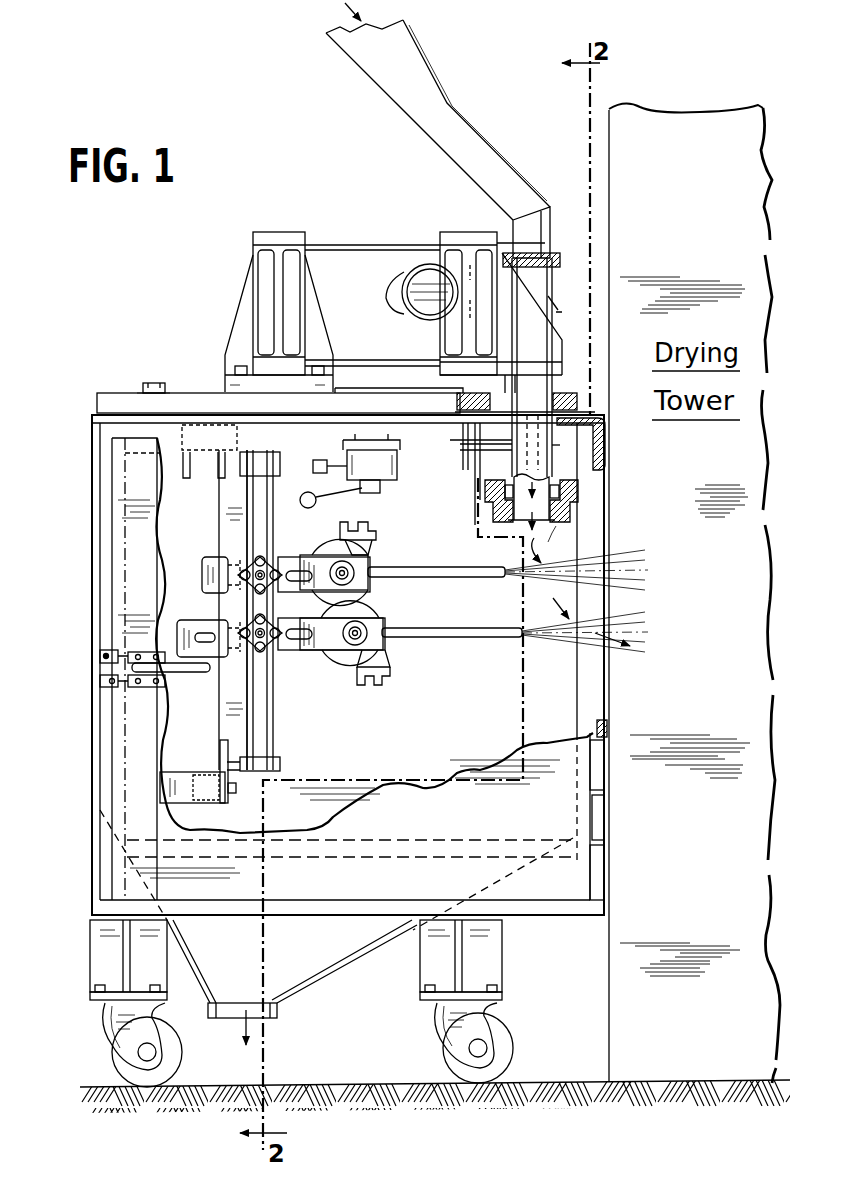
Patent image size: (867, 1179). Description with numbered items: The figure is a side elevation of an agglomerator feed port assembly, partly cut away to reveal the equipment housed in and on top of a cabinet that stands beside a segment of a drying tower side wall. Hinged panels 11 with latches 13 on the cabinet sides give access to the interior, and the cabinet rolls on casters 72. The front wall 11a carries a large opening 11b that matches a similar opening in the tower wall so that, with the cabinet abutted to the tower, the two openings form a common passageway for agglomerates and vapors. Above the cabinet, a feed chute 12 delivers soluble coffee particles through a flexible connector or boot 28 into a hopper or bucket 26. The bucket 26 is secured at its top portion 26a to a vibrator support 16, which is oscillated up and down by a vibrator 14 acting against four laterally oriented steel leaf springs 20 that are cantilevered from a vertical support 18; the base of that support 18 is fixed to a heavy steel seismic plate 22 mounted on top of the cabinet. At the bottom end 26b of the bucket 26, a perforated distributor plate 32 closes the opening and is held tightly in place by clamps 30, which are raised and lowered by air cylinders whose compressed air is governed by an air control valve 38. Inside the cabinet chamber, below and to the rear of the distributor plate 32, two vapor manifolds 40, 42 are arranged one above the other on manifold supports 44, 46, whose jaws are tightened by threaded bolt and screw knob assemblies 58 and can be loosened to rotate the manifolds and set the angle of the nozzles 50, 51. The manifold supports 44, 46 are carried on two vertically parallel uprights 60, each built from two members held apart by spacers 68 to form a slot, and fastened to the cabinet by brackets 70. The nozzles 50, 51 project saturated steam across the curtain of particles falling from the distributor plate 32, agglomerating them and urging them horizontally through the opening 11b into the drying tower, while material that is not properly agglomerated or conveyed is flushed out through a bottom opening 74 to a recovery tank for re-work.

The hinged panels 11 is at (133, 568).
The front wall 11a is at (615, 729).
The large opening 11b is at (612, 604).
The feed chute 12 is at (408, 108).
The latches 13 is at (143, 684).
The vibrator 14 is at (416, 291).
The vibrator support 16 is at (516, 312).
The vertical support 18 is at (273, 304).
The leaf springs 20 is at (352, 247).
The seismic plate 22 is at (362, 404).
The bucket 26 is at (558, 432).
The top portion of bucket 26a is at (573, 308).
The bottom end of bucket 26b is at (553, 448).
The flexible connector or boot 28 is at (553, 258).
The clamps 30 is at (493, 506).
The perforated distributor plate 32 is at (552, 545).
The air control valve 38 is at (404, 477).
The vapor manifold 40 is at (376, 557).
The vapor manifold 42 is at (397, 650).
The manifold support 44 is at (316, 531).
The manifold support 46 is at (318, 655).
The vapor nozzle 50 is at (466, 553).
The vapor nozzle 51 is at (451, 637).
The threaded bolt and screw knob assembly 58 is at (358, 525).
The uprights 60 is at (234, 702).
The spacers 68 is at (257, 468).
The brackets 70 is at (222, 762).
The casters 72 is at (122, 1053).
The bottom opening 74 is at (286, 1020).